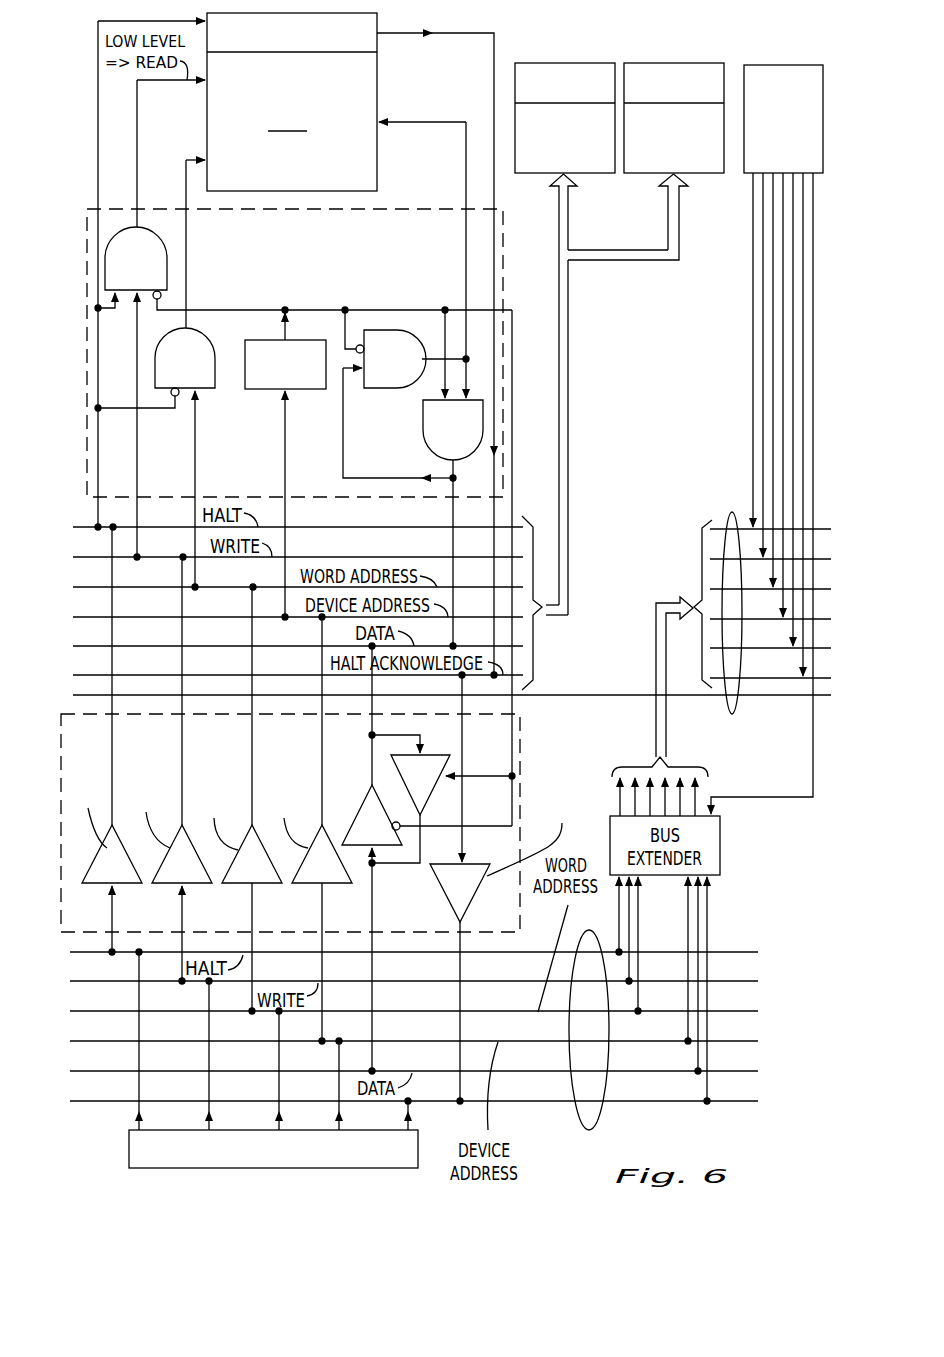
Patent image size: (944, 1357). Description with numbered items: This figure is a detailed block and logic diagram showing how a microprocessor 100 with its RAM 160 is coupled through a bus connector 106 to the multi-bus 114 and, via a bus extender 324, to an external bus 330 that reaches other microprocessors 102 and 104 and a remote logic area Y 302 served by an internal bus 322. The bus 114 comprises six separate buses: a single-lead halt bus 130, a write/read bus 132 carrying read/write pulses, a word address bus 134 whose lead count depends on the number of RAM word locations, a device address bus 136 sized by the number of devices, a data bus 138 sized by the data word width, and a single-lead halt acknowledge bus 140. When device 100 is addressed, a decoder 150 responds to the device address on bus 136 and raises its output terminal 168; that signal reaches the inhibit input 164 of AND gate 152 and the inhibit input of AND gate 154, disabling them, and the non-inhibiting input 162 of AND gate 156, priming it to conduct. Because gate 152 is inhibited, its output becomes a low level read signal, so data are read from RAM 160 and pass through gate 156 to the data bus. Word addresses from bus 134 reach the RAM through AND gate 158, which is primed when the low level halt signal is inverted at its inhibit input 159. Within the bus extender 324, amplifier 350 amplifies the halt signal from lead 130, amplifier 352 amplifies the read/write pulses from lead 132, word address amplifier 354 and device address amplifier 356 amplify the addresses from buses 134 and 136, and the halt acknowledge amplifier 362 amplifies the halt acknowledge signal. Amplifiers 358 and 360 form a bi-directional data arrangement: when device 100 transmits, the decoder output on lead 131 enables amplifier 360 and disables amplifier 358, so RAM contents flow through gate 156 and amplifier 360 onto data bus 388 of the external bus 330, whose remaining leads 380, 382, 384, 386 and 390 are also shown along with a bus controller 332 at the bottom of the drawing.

The microprocessor 100 is at (379, 26).
The microprocessor 102 is at (562, 62).
The microprocessor 104 is at (671, 62).
The bus connector 106 is at (86, 216).
The bus 114 is at (535, 625).
The halt bus 130 is at (372, 527).
The lead 131 is at (514, 378).
The write/read bus 132 is at (372, 557).
The word address bus 134 is at (246, 587).
The device address bus 136 is at (244, 617).
The data bus 138 is at (241, 646).
The halt acknowledge bus 140 is at (243, 675).
The decoder 150 is at (312, 390).
The AND gate 152 is at (167, 246).
The AND gate 154 is at (388, 330).
The AND gate 156 is at (430, 452).
The AND gate 158 is at (215, 390).
The inhibit input 159 is at (176, 400).
The RAM 160 is at (379, 97).
The non-inhibiting input 162 is at (442, 387).
The inhibit input 164 is at (161, 294).
The output terminal 168 is at (282, 317).
The logic area Y 302 is at (780, 64).
The internal bus 322 is at (731, 515).
The bus extender 324 is at (522, 745).
The external bus 330 is at (588, 1122).
The bus controller 332 is at (128, 1150).
The amplifier 350 is at (92, 884).
The amplifier 352 is at (162, 884).
The word address amplifier 354 is at (232, 884).
The device address amplifier 356 is at (302, 884).
The amplifier 358 is at (366, 800).
The amplifier 360 is at (440, 756).
The halt acknowledge amplifier 362 is at (448, 900).
The halt line 380 is at (128, 955).
The write line 382 is at (198, 985).
The word address line 384 is at (272, 1013).
The device address line 386 is at (195, 1043).
The data bus 388 is at (274, 1073).
The extended bus 390 is at (620, 1103).